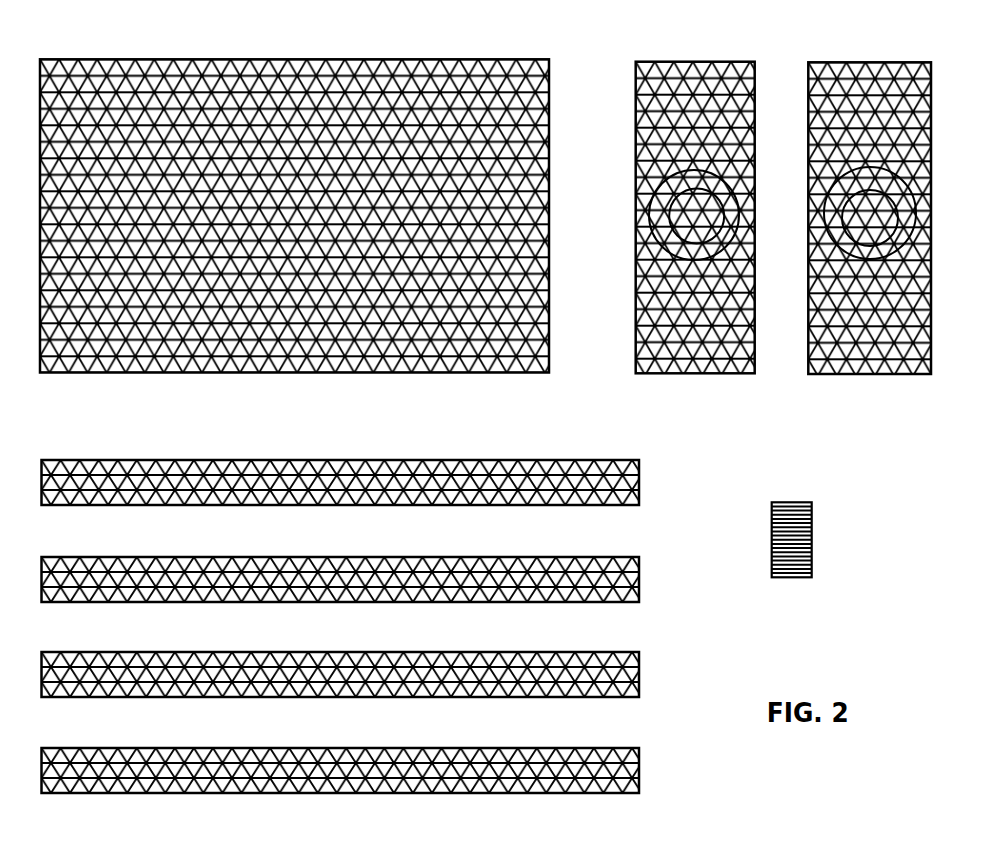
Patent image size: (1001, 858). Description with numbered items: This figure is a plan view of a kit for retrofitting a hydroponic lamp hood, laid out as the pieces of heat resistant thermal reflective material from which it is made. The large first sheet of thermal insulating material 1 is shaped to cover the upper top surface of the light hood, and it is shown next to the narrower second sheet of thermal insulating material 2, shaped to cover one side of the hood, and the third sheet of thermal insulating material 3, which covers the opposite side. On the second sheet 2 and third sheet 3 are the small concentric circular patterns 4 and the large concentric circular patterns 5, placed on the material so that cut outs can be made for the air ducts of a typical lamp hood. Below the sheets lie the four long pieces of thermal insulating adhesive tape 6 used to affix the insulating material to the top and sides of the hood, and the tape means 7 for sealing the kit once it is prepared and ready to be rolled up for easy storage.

The first sheet of thermal insulating material 1 is at (223, 372).
The second sheet of thermal insulating material 2 is at (695, 373).
The third sheet of thermal insulating material 3 is at (867, 374).
The small concentric circular patterns 4 is at (740, 208).
The large concentric circular patterns 5 is at (722, 246).
The long pieces of thermal insulating adhesive tape 6 is at (643, 777).
The tape means 7 is at (812, 539).